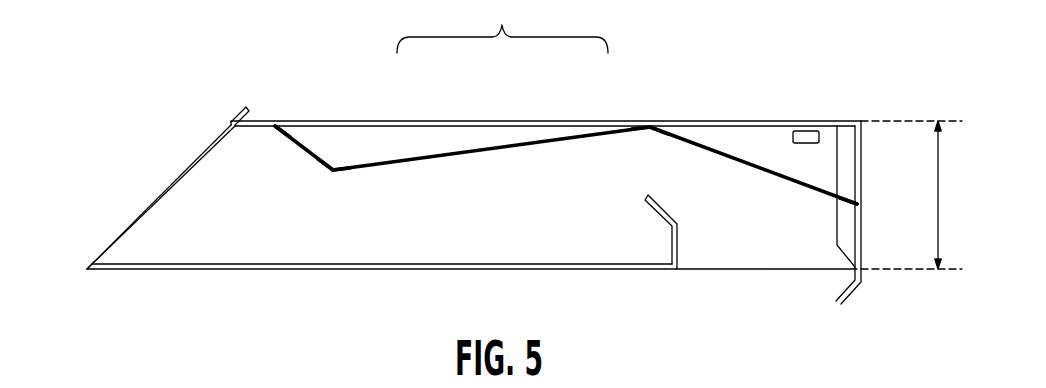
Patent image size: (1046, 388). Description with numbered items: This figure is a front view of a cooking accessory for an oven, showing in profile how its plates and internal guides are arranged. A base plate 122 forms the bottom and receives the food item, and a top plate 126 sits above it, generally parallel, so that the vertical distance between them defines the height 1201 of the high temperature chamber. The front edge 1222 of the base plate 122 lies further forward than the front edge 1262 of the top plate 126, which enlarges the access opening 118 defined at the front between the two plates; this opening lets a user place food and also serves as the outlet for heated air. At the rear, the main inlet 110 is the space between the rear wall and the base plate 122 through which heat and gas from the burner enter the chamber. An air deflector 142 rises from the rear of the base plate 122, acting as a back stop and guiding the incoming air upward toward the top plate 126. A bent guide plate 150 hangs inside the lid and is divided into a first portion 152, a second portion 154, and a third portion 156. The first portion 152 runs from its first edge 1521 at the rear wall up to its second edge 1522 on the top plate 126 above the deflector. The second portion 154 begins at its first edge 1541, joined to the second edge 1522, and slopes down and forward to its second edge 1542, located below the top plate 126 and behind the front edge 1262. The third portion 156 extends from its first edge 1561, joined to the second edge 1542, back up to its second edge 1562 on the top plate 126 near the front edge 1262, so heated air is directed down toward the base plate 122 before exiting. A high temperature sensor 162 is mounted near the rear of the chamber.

The main inlet 110 is at (800, 277).
The access opening 118 is at (159, 196).
The base plate 122 is at (192, 272).
The front edge of base plate 1222 is at (84, 262).
The top plate 126 is at (713, 121).
The front edge of top plate 1262 is at (228, 122).
The air deflector 142 is at (657, 208).
The guide plate 150 is at (502, 26).
The first portion 152 is at (683, 139).
The first edge of first portion 1521 is at (865, 205).
The second edge of first portion 1522 is at (655, 135).
The second portion 154 is at (547, 139).
The first edge of second portion 1541 is at (643, 134).
The second edge of second portion 1542 is at (338, 178).
The third portion 156 is at (315, 152).
The first edge of third portion 1561 is at (329, 178).
The second edge of third portion 1562 is at (275, 118).
The high temperature sensor 162 is at (805, 130).
The height 1201 is at (937, 203).